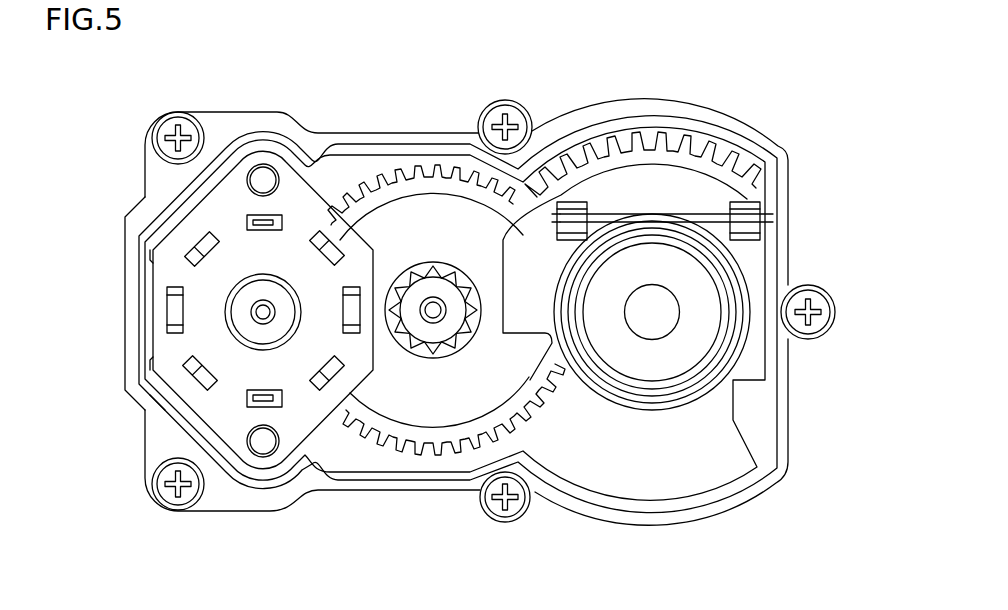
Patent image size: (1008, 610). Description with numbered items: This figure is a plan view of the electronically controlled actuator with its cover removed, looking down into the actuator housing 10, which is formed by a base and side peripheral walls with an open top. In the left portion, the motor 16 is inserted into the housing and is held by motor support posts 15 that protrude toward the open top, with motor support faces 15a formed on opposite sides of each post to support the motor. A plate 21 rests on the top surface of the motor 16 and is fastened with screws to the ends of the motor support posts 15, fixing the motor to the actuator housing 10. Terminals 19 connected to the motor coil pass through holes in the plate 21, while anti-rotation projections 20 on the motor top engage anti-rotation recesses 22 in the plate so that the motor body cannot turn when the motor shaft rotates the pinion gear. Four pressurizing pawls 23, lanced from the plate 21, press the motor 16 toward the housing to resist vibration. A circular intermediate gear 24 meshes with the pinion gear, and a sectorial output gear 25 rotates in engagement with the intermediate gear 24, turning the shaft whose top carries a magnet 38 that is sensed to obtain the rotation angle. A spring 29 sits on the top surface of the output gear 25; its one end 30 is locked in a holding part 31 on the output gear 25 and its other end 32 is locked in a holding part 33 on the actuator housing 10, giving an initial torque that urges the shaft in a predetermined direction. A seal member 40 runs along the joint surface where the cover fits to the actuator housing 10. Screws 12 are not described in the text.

The actuator housing 10 is at (722, 508).
The screw 12 is at (182, 111).
The motor support post 15 is at (283, 157).
The motor support face 15a is at (183, 208).
The motor 16 is at (352, 200).
The terminal 19 is at (257, 150).
The anti-rotation projection 20 is at (175, 315).
The plate 21 is at (157, 402).
The anti-rotation recess 22 is at (173, 335).
The pressurizing pawl 23 is at (195, 246).
The intermediate gear 24 is at (433, 400).
The output gear 25 is at (659, 132).
The spring 29 is at (694, 215).
The one end of the spring 30 is at (556, 221).
The holding part 31 is at (578, 202).
The other end of the spring 32 is at (773, 221).
The holding part 33 is at (752, 203).
The magnet 38 is at (662, 308).
The seal member 40 is at (661, 505).